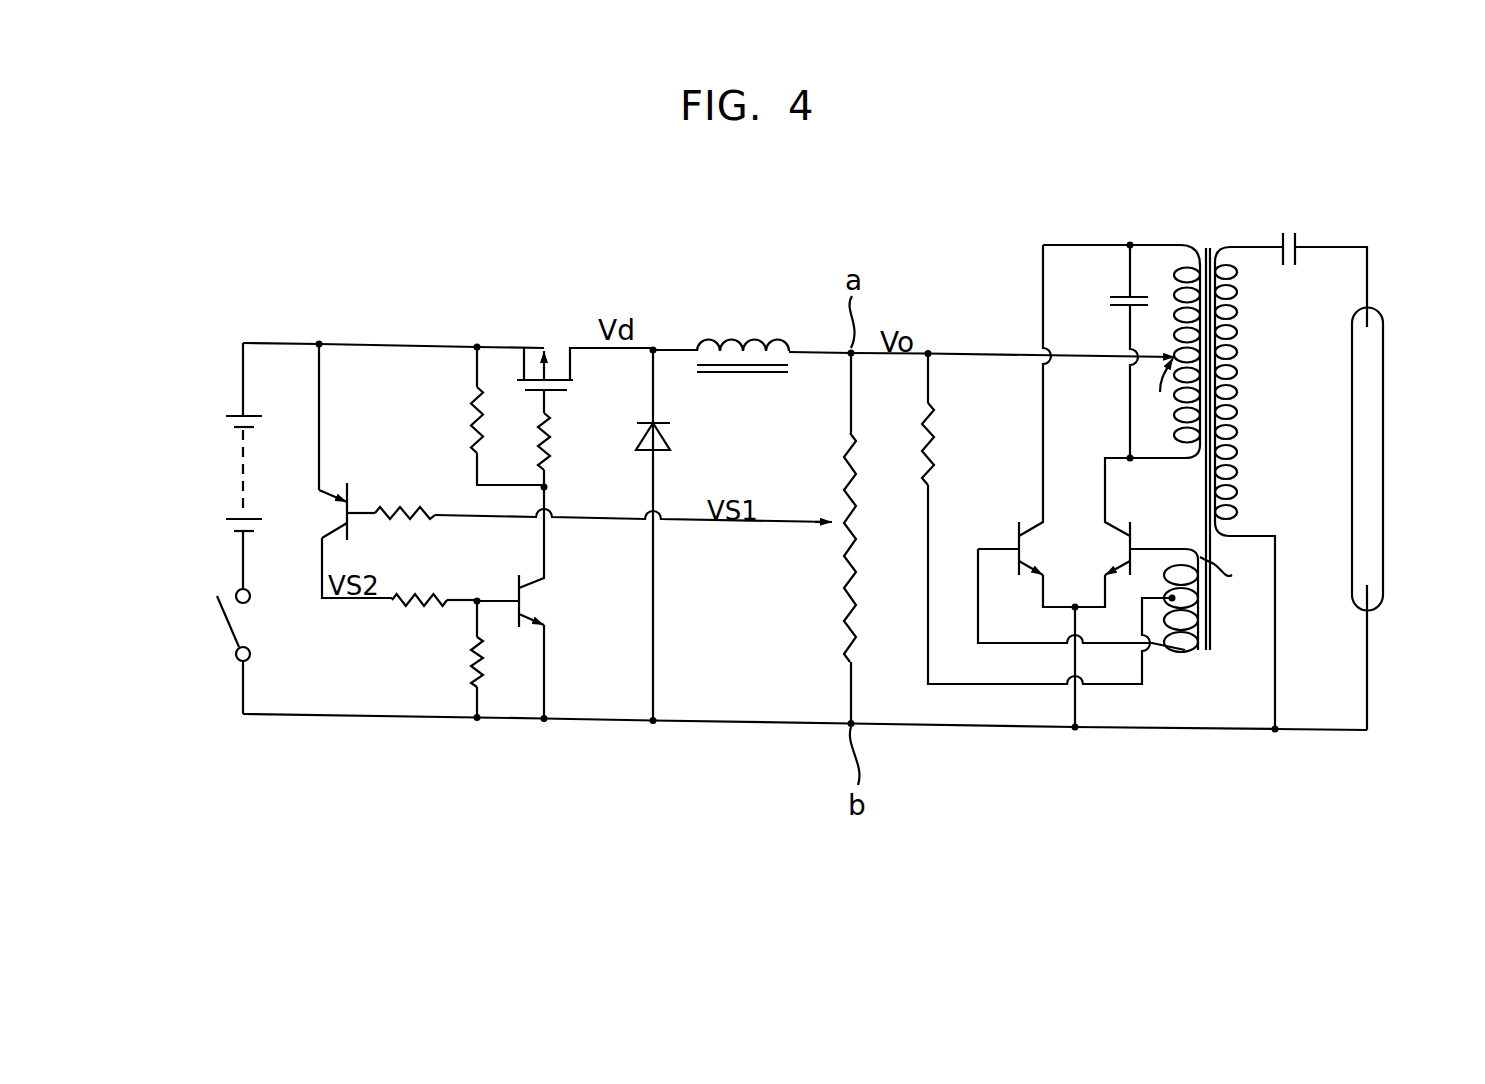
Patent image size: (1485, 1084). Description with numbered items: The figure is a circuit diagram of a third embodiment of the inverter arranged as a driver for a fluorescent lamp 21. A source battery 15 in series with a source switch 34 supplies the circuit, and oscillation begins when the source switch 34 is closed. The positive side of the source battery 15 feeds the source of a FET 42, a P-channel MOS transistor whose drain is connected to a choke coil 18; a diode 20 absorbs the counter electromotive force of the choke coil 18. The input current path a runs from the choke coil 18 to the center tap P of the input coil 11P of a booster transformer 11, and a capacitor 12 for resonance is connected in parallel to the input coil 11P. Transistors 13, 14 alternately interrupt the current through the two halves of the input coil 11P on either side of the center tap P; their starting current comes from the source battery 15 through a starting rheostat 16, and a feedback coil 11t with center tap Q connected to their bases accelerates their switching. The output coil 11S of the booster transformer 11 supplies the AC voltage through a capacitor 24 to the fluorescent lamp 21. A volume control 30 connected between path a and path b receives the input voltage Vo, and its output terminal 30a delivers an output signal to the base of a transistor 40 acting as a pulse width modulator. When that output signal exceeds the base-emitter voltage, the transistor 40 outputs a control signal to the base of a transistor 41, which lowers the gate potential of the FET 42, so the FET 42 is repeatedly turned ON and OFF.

The source battery 15 is at (240, 490).
The source switch 34 is at (232, 625).
The transistor 40 is at (355, 497).
The transistor 41 is at (540, 598).
The FET 42 is at (524, 342).
The diode 20 is at (675, 440).
The choke coil 18 is at (748, 332).
The volume control 30 is at (848, 480).
The output terminal 30a is at (803, 527).
The starting rheostat 16 is at (938, 452).
The capacitor 12 is at (1110, 303).
The input coil 11P is at (1172, 290).
The booster transformer 11 is at (1208, 247).
The output coil 11S is at (1238, 332).
The feedback coil 11t is at (1192, 655).
The capacitor 24 is at (1290, 233).
The fluorescent lamp 21 is at (1370, 448).
The transistor 13 is at (1040, 527).
The transistor 14 is at (1140, 528).